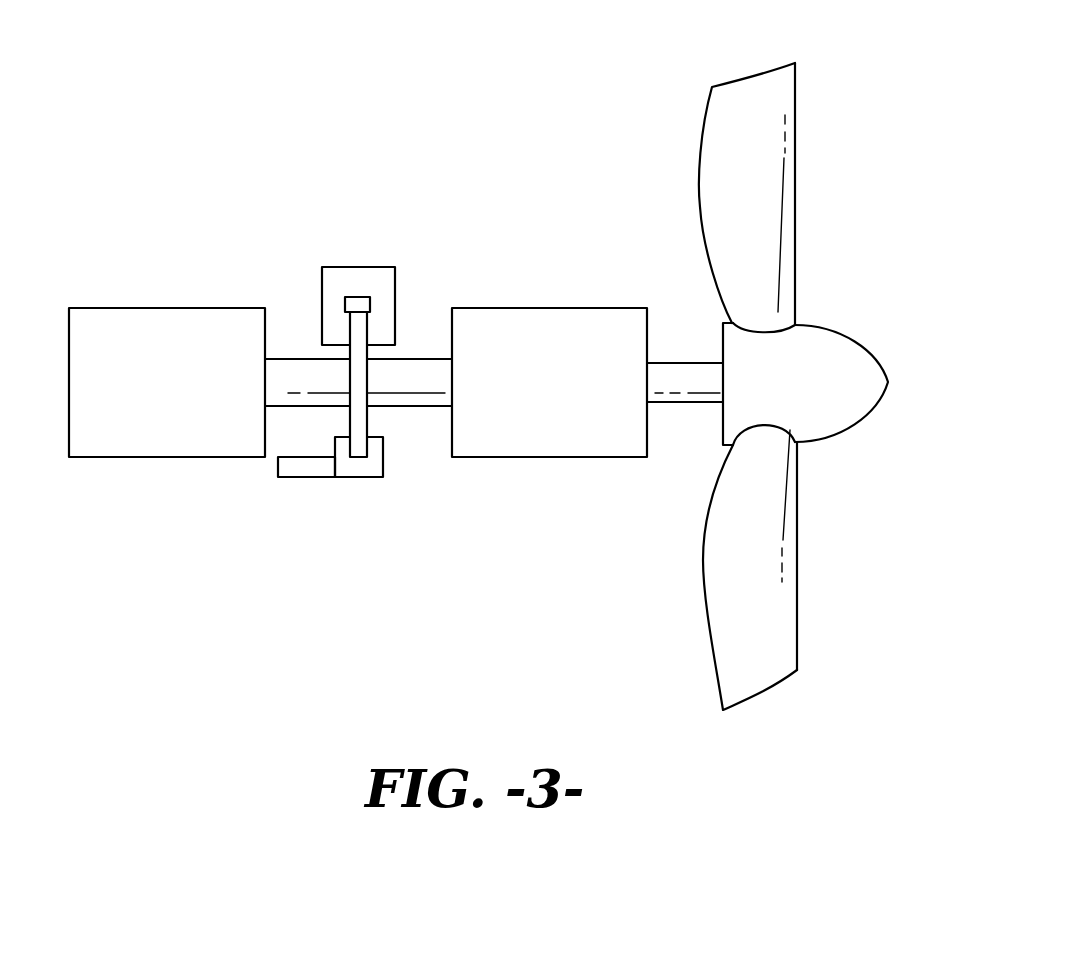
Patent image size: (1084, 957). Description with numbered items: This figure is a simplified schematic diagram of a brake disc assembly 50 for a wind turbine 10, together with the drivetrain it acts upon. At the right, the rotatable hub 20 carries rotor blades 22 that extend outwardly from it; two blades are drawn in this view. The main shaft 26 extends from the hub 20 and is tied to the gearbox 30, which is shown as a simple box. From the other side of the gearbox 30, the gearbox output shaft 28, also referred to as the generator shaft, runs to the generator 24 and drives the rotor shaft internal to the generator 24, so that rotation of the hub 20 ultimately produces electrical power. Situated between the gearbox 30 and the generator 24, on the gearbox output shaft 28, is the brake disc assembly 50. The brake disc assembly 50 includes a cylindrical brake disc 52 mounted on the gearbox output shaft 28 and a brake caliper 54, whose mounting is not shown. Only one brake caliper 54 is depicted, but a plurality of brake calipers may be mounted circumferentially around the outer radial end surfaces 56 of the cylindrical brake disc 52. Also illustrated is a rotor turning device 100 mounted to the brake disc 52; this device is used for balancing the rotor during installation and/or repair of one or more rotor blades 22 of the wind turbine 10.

The wind turbine 10 is at (853, 245).
The hub 20 is at (890, 372).
The rotor blade 22 is at (797, 160).
The generator 24 is at (140, 308).
The main shaft 26 is at (703, 362).
The gearbox output shaft 28 is at (402, 406).
The gearbox 30 is at (528, 308).
The brake disc assembly 50 is at (359, 359).
The cylindrical brake disc 52 is at (358, 460).
The brake caliper 54 is at (352, 267).
The outer radial end surfaces 56 is at (345, 323).
The rotor turning device 100 is at (299, 490).